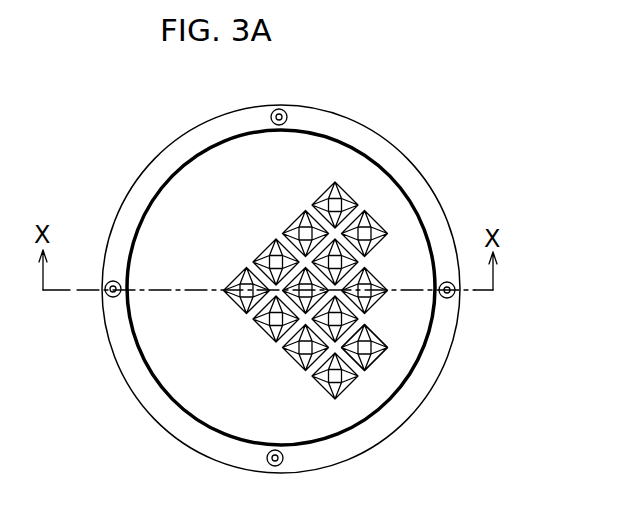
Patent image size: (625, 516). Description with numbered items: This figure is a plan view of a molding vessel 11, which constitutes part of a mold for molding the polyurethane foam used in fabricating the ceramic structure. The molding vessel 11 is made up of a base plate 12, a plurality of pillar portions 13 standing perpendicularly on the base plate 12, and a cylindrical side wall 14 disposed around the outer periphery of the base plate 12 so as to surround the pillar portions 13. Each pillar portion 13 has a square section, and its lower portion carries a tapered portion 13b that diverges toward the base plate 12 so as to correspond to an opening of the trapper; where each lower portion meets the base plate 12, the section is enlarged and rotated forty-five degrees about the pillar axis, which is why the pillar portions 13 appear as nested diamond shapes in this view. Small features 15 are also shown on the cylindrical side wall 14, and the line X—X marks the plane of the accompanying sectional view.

The molding vessel 11 is at (413, 160).
The base plate 12 is at (295, 157).
The pillar portions 13 is at (364, 350).
The tapered portion 13b is at (376, 346).
The cylindrical side wall 14 is at (430, 210).
The screw hole 15 is at (452, 300).